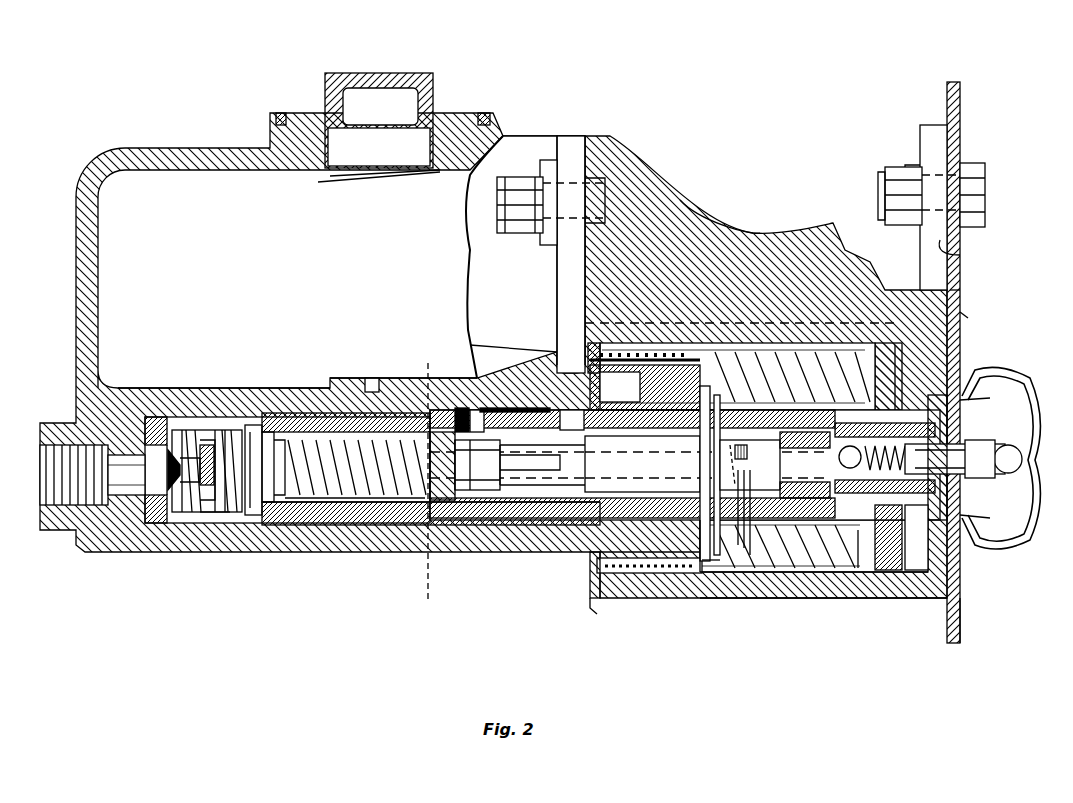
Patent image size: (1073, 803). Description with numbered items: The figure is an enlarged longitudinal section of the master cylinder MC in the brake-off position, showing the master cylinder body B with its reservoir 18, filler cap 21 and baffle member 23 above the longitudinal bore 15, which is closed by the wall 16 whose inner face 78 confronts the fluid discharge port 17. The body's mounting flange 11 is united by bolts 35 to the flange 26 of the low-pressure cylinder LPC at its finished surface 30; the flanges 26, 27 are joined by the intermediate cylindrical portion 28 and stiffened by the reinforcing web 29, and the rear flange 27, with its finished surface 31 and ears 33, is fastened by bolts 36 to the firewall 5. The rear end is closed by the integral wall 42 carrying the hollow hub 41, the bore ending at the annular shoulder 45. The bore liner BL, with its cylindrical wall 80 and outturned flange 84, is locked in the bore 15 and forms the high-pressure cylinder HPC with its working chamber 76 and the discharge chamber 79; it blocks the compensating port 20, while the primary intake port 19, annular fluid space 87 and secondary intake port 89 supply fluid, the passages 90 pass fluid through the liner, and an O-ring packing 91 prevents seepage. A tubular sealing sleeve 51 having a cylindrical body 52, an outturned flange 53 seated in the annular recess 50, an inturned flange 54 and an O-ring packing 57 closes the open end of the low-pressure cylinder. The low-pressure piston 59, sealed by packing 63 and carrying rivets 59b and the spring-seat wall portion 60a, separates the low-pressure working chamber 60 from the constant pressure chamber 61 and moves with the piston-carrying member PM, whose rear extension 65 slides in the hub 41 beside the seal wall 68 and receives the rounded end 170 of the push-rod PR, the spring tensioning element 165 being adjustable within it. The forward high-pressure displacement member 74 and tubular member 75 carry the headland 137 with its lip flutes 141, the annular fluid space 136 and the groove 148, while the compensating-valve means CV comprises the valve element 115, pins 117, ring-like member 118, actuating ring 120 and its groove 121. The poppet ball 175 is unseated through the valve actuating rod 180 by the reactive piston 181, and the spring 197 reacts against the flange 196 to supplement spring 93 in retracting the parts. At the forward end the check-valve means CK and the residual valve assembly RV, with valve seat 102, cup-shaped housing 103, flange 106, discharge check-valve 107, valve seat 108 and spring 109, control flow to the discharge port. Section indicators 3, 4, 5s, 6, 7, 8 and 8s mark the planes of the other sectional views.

The master cylinder body B is at (72, 183).
The fluid supply reservoir 18 is at (198, 182).
The filler cap 21 is at (322, 113).
The baffle member 23 is at (322, 182).
The bolts 35 is at (520, 175).
The mounting flange 11 is at (560, 200).
The finished surface 30 is at (575, 145).
The master cylinder MC is at (592, 118).
The flange 26 is at (615, 162).
The reinforcing web 29 is at (757, 233).
The flange 27 is at (945, 139).
The bolts 36 is at (982, 178).
The finished surface 31 is at (958, 226).
The ears 33 is at (960, 255).
The packing 63 is at (895, 345).
The integral wall 42 is at (960, 292).
The annular shoulder 45 is at (968, 318).
The rivets 59b is at (905, 370).
The vertical wall 68 is at (962, 400).
The hollow hub 41 is at (1005, 392).
The spring tensioning element 165 is at (1000, 400).
The cylindrical extension 65 is at (1012, 445).
The push-rod PR is at (1020, 459).
The rounded end 170 is at (1000, 488).
The wall 16 is at (120, 400).
The fluid discharge port 17 is at (92, 428).
The inner face 78 is at (158, 420).
The longitudinal bore 15 is at (183, 430).
The discharge check-valve 107 is at (205, 445).
The discharge chamber 79 is at (225, 425).
The high pressure check-valve means CK is at (248, 422).
The O-ring packing 91 is at (276, 425).
The bore liner BL is at (290, 438).
The section line 3- 3 is at (276, 542).
The compression spring 197 is at (355, 450).
The compensating port 20 is at (372, 378).
The cylindrical wall 80 is at (350, 450).
The primary intake port 19 is at (435, 378).
The section line 4- 4 is at (440, 603).
The headland 137 is at (468, 410).
The secondary intake port 89 is at (480, 410).
The annular fluid space 87 is at (520, 405).
The elongated tubular member 75 is at (535, 480).
The high-pressure displacement member 74 is at (568, 430).
The annular recess 50 is at (592, 350).
The annular groove 148 is at (642, 403).
The firewall 5 is at (962, 612).
The section line 5-5 5s is at (567, 490).
The longitudinal flutes 141 is at (580, 455).
The valve actuating rod 180 is at (550, 466).
The valve-forming element 115 is at (645, 352).
The outturned annular flange 84 is at (712, 390).
The section line 6- 6 is at (722, 542).
The compensating-valve means CV is at (729, 464).
The piston-carrying member PM is at (764, 435).
The low-pressure working chamber 60 is at (822, 383).
The section line 7- 7 is at (812, 542).
The section line 8- 8 is at (850, 546).
The piston spring 8s is at (845, 465).
The annular groove 121 is at (755, 446).
The actuating ring 120 is at (742, 470).
The ring-like member 118 is at (746, 528).
The pins 117 is at (736, 540).
The poppet-type ball 175 is at (845, 468).
The residual pressure check-valve assembly RV is at (175, 475).
The valve seat 102 is at (168, 490).
The cup-shaped housing 103 is at (188, 510).
The compression spring 109 is at (205, 520).
The annular valve seat 108 is at (215, 520).
The outturned annular flange 106 is at (227, 520).
The outturned annular flange 196 is at (296, 525).
The high-pressure working chamber 76 is at (340, 495).
The high-pressure unit or cylinder HPC is at (405, 500).
The fluid communication passages 90 is at (452, 505).
The reactive valve-actuating piston 181 is at (495, 495).
The annular fluid space 136 is at (505, 500).
The outturned annular flange 53 is at (590, 600).
The O-ring packing 57 is at (620, 598).
The cylindrical body 52 is at (640, 575).
The low-pressure unit or cylinder LPC is at (688, 602).
The tubular sealing sleeve 51 is at (712, 575).
The inturned annular flange 54 is at (718, 575).
The spring 93 is at (795, 600).
The cylindrical portion 28 is at (810, 575).
The cylindrical wall portion 60a is at (860, 575).
The constant pressure chamber 61 is at (905, 570).
The low-pressure piston 59 is at (895, 575).